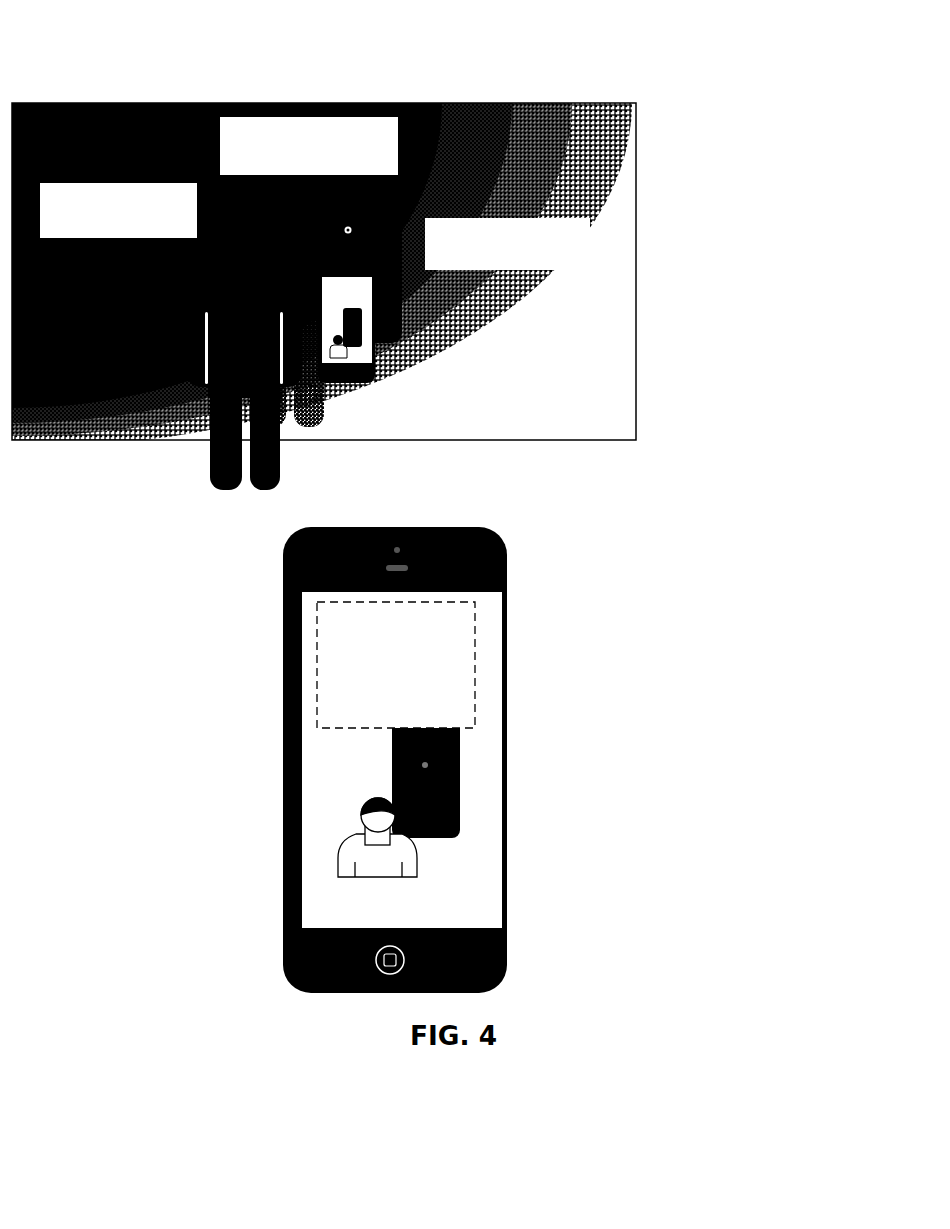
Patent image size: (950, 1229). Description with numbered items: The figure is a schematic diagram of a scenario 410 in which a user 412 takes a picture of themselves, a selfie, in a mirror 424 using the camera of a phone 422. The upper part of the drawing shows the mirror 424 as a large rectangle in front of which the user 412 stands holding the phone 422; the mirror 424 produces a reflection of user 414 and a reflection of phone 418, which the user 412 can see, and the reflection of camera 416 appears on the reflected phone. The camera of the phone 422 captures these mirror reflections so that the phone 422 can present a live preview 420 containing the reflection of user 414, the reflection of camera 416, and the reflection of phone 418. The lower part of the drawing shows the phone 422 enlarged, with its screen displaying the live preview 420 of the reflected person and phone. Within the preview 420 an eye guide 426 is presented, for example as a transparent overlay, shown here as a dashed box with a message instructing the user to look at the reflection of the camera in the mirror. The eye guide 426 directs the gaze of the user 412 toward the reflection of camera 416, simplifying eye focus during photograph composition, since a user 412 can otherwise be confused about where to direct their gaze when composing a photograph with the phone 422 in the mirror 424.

The scenario 410 is at (152, 26).
The user 412 is at (211, 445).
The reflection of user 414 is at (240, 231).
The reflection of camera 416 is at (343, 223).
The reflection of phone 418 is at (403, 257).
The live preview 420 is at (382, 358).
The phone 422 is at (353, 383).
The mirror 424 is at (635, 322).
The eye guide 426 is at (343, 729).